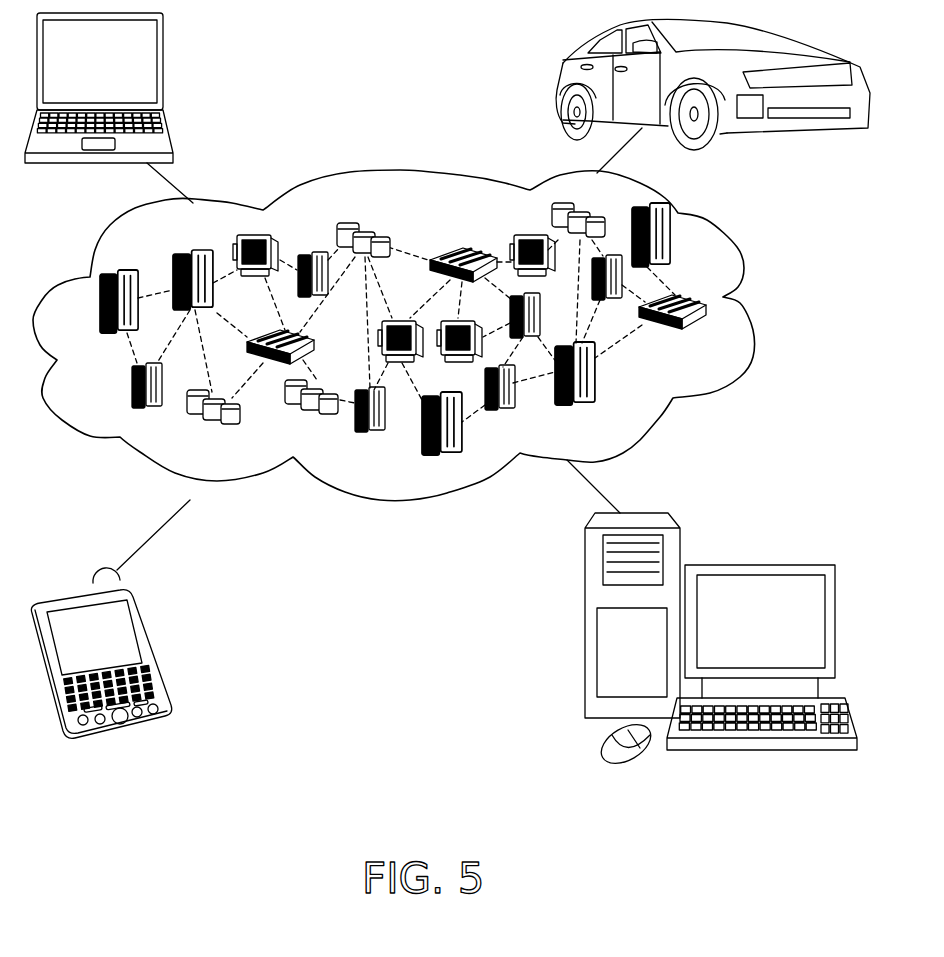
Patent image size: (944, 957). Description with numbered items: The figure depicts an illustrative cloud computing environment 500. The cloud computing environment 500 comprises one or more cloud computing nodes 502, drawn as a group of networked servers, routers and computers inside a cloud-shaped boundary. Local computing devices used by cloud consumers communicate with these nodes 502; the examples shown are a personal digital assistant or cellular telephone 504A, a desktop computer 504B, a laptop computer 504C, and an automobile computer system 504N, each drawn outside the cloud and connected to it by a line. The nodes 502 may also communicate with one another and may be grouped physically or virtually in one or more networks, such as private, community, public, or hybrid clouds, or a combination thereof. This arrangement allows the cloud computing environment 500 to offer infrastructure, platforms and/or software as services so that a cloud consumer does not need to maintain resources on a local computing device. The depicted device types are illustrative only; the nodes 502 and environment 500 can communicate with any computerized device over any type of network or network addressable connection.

The cloud computing environment 500 is at (712, 307).
The cloud computing nodes 502 is at (703, 333).
The personal digital assistant or cellular telephone 504A is at (140, 617).
The desktop computer 504B is at (747, 565).
The laptop computer 504C is at (163, 47).
The automobile computer system 504N is at (560, 88).